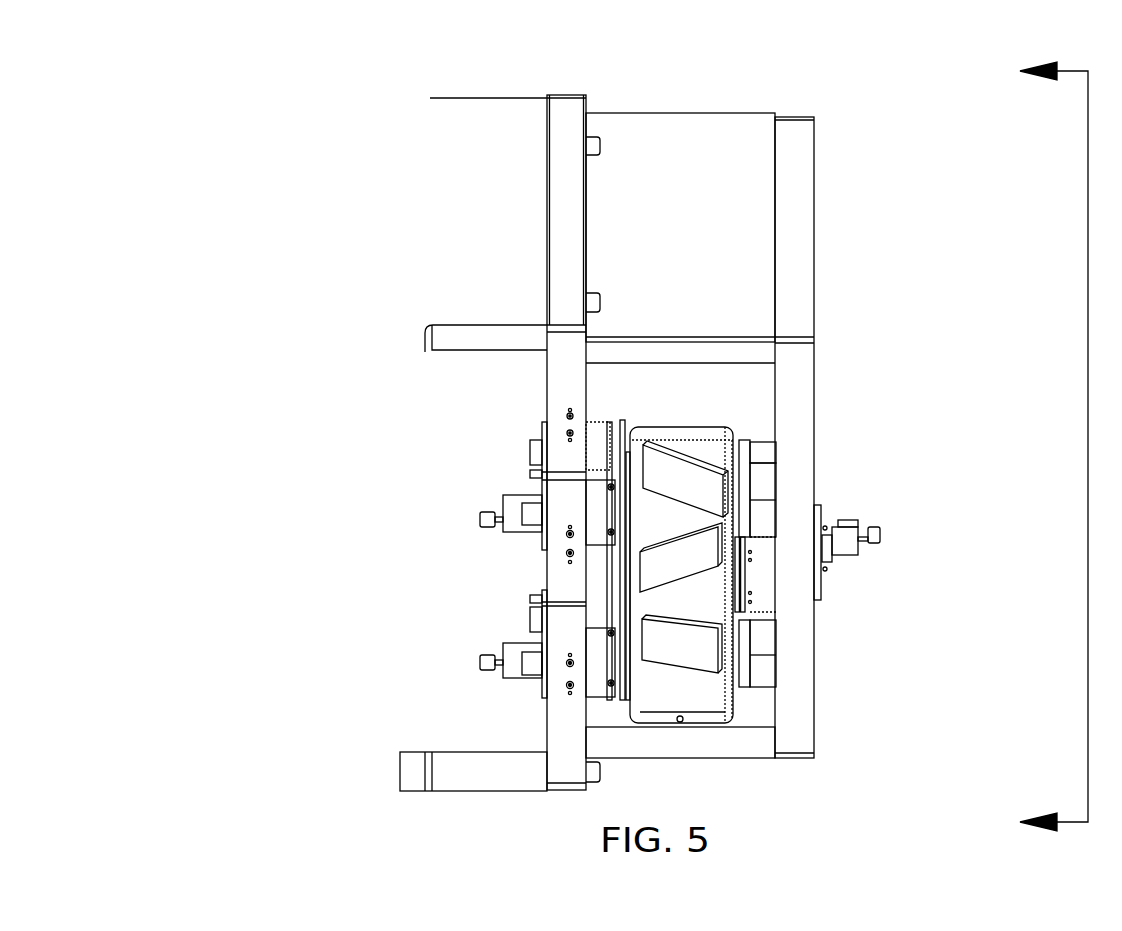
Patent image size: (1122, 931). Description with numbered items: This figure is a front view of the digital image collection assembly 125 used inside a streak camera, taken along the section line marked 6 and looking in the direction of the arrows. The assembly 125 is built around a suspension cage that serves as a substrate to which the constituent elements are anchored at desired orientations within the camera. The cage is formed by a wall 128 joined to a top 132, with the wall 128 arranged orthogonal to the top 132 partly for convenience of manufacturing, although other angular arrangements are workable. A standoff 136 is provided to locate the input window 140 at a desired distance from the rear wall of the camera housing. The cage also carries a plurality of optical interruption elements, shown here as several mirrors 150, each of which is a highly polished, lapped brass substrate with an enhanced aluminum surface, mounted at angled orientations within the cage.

The section line 6- 6 is at (1051, 447).
The digital image collection assembly 125 is at (345, 501).
The wall 128 is at (692, 232).
The top 132 is at (802, 245).
The standoff 136 is at (490, 232).
The input window 140 is at (694, 382).
The mirror 150 is at (706, 494).